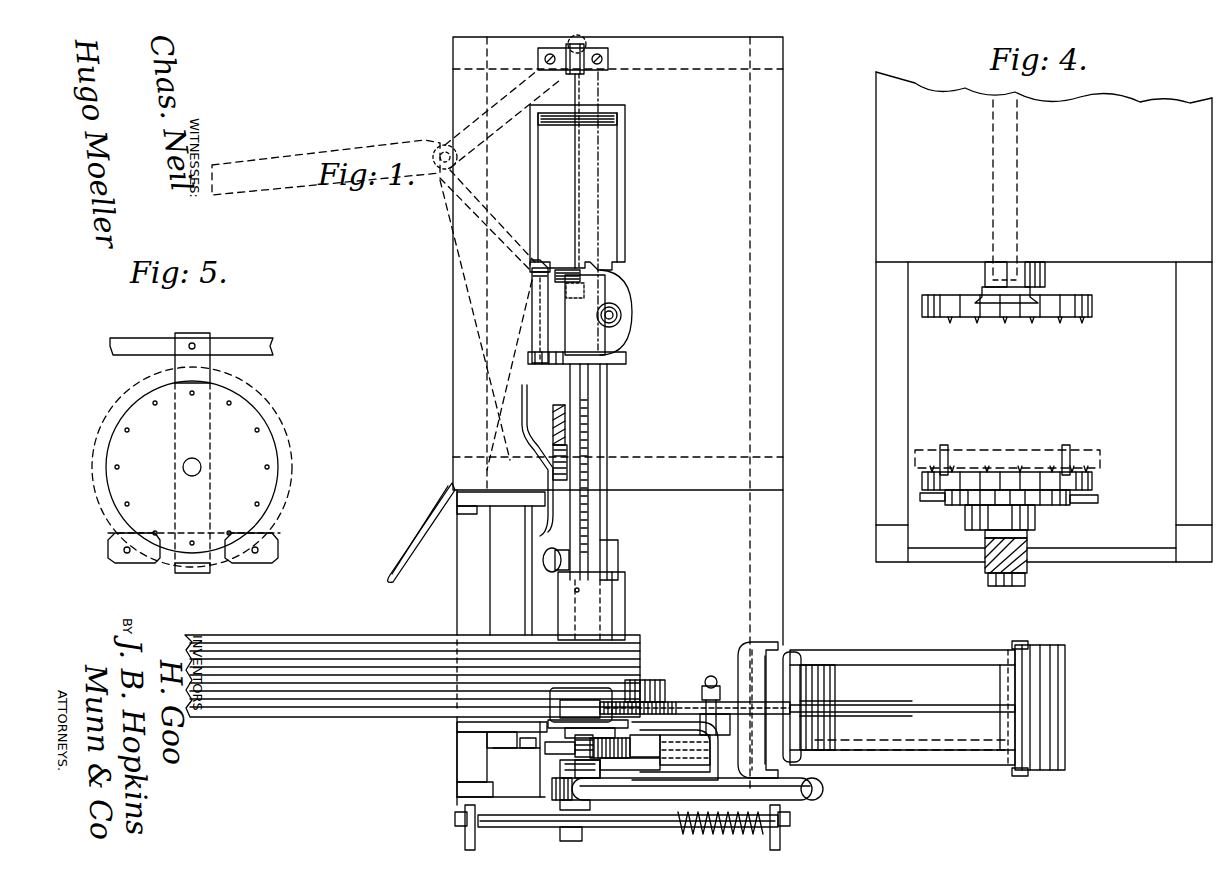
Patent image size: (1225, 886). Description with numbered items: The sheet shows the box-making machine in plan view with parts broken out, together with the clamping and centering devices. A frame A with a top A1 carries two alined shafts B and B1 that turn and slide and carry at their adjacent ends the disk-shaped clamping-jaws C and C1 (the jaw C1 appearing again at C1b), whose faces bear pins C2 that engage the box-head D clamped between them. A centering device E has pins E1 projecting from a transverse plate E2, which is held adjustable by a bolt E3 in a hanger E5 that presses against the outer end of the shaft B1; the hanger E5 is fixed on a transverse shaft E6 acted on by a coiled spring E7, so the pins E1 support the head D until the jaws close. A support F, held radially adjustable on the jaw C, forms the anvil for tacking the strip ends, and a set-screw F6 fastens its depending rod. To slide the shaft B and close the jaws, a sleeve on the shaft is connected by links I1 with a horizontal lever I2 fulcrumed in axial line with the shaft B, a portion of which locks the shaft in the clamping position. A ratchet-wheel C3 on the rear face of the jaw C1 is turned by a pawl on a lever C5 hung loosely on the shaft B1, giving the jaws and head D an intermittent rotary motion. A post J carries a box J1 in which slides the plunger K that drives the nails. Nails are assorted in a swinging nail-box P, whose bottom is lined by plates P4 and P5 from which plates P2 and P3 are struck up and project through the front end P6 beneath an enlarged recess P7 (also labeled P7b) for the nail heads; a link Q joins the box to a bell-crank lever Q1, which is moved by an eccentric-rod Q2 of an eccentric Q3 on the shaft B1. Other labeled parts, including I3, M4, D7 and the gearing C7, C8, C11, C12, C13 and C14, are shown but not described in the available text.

In FIG. 1, the frame A is at (587, 647).
In FIG. 4, the frame A is at (1044, 317).
In FIG. 1, the top A1 is at (618, 413).
In FIG. 4, the shaft B is at (1017, 262).
In FIG. 4, the shaft B1 is at (1027, 578).
In FIG. 1, the clamping-jaw C is at (612, 680).
In FIG. 1, the clamping-jaw C1 is at (525, 515).
In FIG. 4, the clamping-jaw C1 is at (1092, 310).
In FIG. 1, the gear C1b is at (645, 678).
In FIG. 4, the pins C2 is at (1030, 320).
In FIG. 1, the ratchet-wheel C3 is at (640, 757).
In FIG. 1, the lever C5 is at (808, 800).
In FIG. 4, the gear wheel C7 is at (1092, 484).
In FIG. 4, the teeth C8 is at (985, 472).
In FIG. 1, the disk C11 is at (515, 768).
In FIG. 5, the disk C11 is at (240, 468).
In FIG. 1, the pin C12 is at (502, 735).
In FIG. 5, the pin C12 is at (190, 395).
In FIG. 4, the gear C13 is at (955, 505).
In FIG. 1, the gear C14 is at (610, 766).
In FIG. 1, the box-head D is at (672, 700).
In FIG. 4, the box-head D is at (1009, 450).
In FIG. 1, the table D7 is at (395, 712).
In FIG. 4, the centering device E is at (928, 508).
In FIG. 5, the centering device E is at (194, 562).
In FIG. 4, the pins E1 is at (944, 445).
In FIG. 5, the pins E1 is at (125, 553).
In FIG. 4, the plate E2 is at (1080, 503).
In FIG. 5, the plate E2 is at (165, 560).
In FIG. 1, the bolt E3 is at (566, 752).
In FIG. 1, the hanger E5 is at (590, 830).
In FIG. 4, the hanger E5 is at (992, 586).
In FIG. 5, the hanger E5 is at (212, 370).
In FIG. 1, the shaft E6 is at (635, 828).
In FIG. 5, the shaft E6 is at (258, 338).
In FIG. 1, the coiled spring E7 is at (700, 836).
In FIG. 5, the coiled spring E7 is at (258, 553).
In FIG. 4, the support F is at (985, 270).
In FIG. 4, the set-screw F6 is at (1045, 276).
In FIG. 1, the links I1 is at (540, 380).
In FIG. 1, the lever I2 is at (420, 500).
In FIG. 1, the frame I3 is at (600, 190).
In FIG. 1, the post J is at (695, 762).
In FIG. 1, the box J1 is at (592, 690).
In FIG. 1, the plunger K is at (581, 705).
In FIG. 1, the bracket M4 is at (742, 650).
In FIG. 1, the nail-box P is at (928, 648).
In FIG. 1, the plate P2 is at (878, 688).
In FIG. 1, the plate P3 is at (872, 713).
In FIG. 1, the bottom plate P4 is at (890, 672).
In FIG. 1, the bottom plate P5 is at (920, 745).
In FIG. 1, the front end P6 is at (792, 672).
In FIG. 1, the recess P7 is at (808, 700).
In FIG. 1, the rod P7b is at (965, 705).
In FIG. 1, the link Q is at (1040, 645).
In FIG. 1, the bell-crank lever Q1 is at (1000, 745).
In FIG. 1, the eccentric-rod Q2 is at (620, 780).
In FIG. 1, the eccentric Q3 is at (548, 784).